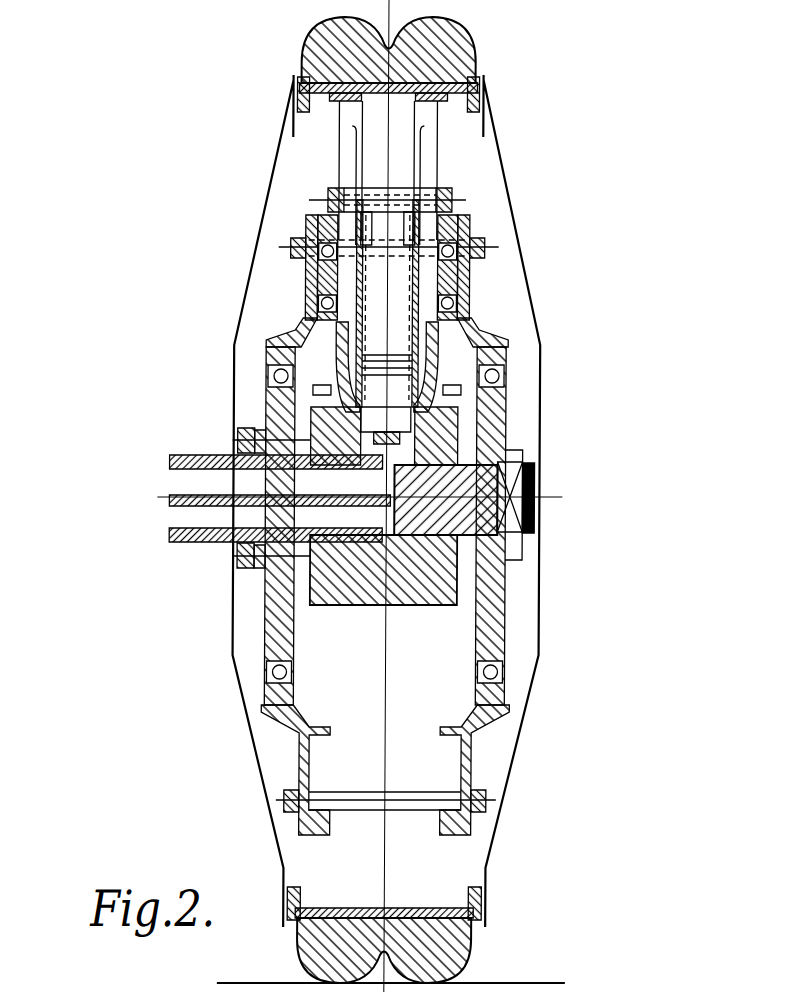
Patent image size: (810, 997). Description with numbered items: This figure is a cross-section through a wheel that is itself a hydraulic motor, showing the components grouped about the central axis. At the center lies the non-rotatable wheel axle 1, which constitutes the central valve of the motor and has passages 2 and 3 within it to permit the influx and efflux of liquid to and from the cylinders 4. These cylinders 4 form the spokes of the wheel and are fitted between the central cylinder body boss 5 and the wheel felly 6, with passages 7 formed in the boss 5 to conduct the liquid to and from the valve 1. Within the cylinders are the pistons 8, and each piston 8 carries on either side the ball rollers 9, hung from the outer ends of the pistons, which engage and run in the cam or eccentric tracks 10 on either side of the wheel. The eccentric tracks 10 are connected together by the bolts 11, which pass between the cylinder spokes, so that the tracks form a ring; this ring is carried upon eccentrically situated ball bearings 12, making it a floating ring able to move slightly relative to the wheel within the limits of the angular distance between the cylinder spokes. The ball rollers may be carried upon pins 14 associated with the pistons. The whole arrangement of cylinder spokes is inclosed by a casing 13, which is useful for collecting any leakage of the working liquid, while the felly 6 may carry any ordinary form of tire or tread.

The wheel axle 1 is at (516, 521).
The passage 2 is at (279, 518).
The passage 3 is at (275, 476).
The cylinder 4 is at (418, 364).
The cylinder body boss 5 is at (443, 427).
The wheel felly 6 is at (474, 79).
The passage 7 is at (378, 468).
The piston 8 is at (387, 322).
The ball roller 9 is at (462, 306).
The eccentric track 10 is at (468, 292).
The bolt 11 is at (473, 245).
The ball bearing 12 is at (291, 669).
The casing 13 is at (252, 738).
The pin 14 is at (323, 281).